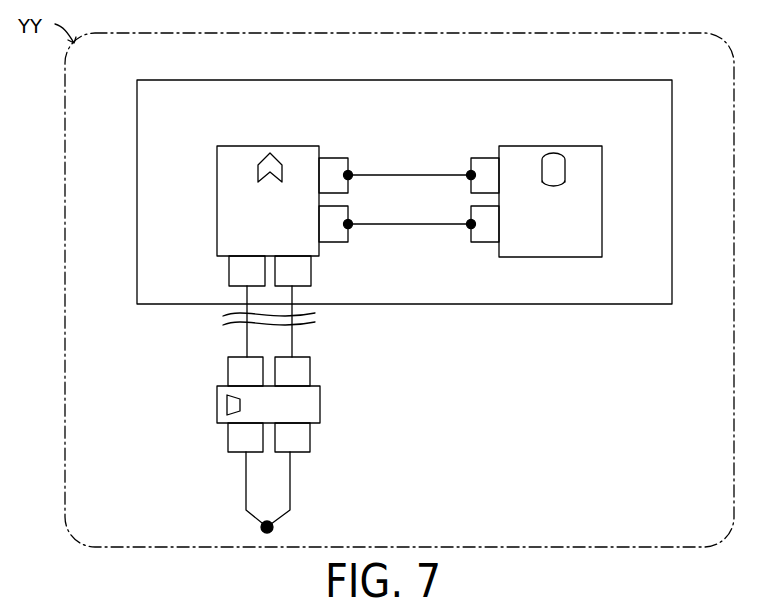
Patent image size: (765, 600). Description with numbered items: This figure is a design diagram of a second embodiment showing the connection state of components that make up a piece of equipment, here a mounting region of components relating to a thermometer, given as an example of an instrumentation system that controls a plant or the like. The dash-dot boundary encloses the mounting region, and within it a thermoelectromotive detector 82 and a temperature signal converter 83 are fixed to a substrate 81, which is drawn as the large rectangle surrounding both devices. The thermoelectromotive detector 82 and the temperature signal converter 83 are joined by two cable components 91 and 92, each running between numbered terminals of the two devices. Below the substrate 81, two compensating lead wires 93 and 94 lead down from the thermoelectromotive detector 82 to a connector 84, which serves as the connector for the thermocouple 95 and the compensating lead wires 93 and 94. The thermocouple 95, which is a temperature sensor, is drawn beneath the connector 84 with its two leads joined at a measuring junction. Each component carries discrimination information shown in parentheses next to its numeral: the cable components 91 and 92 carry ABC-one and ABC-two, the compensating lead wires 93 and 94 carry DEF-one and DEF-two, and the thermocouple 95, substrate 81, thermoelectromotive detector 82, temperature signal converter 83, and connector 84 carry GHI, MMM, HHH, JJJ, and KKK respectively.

The substrate 81 is at (405, 80).
The thermoelectromotive detector 82 is at (217, 203).
The temperature signal converter 83 is at (602, 203).
The connector 84 is at (320, 405).
The cable component 91 is at (393, 175).
The cable component 92 is at (388, 228).
The compensating lead wire 93 is at (292, 343).
The compensating lead wire 94 is at (247, 343).
The thermocouple 95 is at (290, 489).